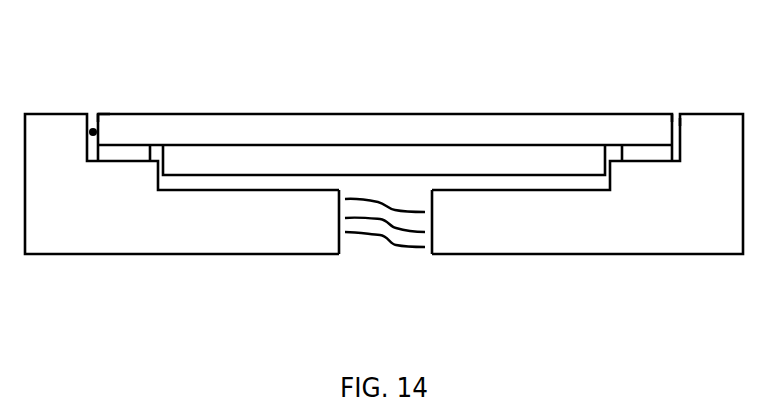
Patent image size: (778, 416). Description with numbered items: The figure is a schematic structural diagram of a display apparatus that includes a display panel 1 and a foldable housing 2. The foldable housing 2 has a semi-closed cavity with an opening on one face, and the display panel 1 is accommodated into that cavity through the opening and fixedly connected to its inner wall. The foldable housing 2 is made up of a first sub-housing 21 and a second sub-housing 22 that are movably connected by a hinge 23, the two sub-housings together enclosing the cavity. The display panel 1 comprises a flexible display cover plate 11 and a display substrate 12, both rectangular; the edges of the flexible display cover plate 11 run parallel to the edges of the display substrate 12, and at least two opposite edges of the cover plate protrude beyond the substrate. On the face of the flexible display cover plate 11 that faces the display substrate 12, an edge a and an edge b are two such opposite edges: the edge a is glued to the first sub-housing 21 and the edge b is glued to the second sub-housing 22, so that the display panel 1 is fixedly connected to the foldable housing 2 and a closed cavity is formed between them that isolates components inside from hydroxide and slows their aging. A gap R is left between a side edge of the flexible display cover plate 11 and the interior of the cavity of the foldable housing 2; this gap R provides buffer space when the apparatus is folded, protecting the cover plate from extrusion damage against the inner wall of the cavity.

The display panel 1 is at (385, 97).
The flexible display cover plate 11 is at (262, 130).
The display substrate 12 is at (308, 170).
The foldable housing 2 is at (384, 227).
The first sub-housing 21 is at (302, 223).
The second sub-housing 22 is at (470, 223).
The hinge 23 is at (385, 244).
The gap R is at (93, 128).
The edge a is at (102, 117).
The edge b is at (677, 119).